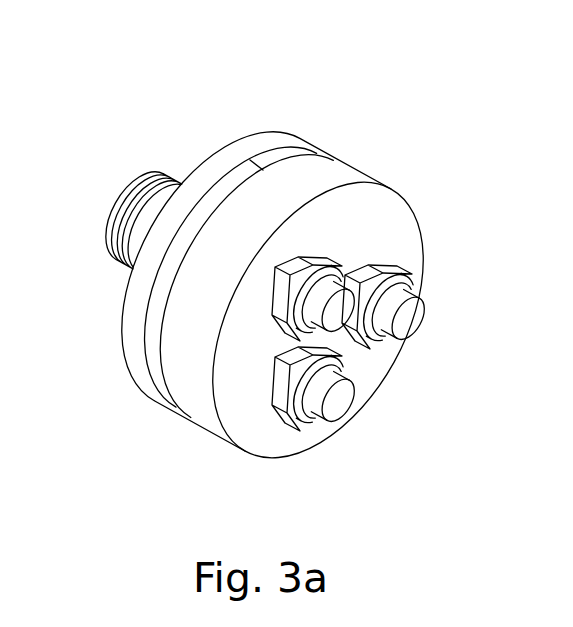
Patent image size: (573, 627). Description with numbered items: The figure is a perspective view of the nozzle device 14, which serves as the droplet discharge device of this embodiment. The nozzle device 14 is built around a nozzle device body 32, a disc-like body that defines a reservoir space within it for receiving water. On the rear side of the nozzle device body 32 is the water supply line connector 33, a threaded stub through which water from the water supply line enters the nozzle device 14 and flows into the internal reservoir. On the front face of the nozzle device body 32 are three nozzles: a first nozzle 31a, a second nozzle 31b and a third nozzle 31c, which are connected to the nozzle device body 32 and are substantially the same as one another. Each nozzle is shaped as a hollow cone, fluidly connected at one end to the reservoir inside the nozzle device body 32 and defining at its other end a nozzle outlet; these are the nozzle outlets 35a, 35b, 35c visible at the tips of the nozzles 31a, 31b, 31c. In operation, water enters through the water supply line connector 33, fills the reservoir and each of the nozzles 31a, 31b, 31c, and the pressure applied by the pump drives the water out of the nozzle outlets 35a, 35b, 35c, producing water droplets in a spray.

The nozzle device 14 is at (103, 74).
The nozzle device body 32 is at (315, 173).
The water supply line connector 33 is at (107, 247).
The first nozzle 31a is at (342, 310).
The second nozzle 31b is at (405, 283).
The third nozzle 31c is at (323, 408).
The nozzle outlet 35a is at (400, 266).
The nozzle outlet 35b is at (413, 318).
The nozzle outlet 35c is at (343, 402).